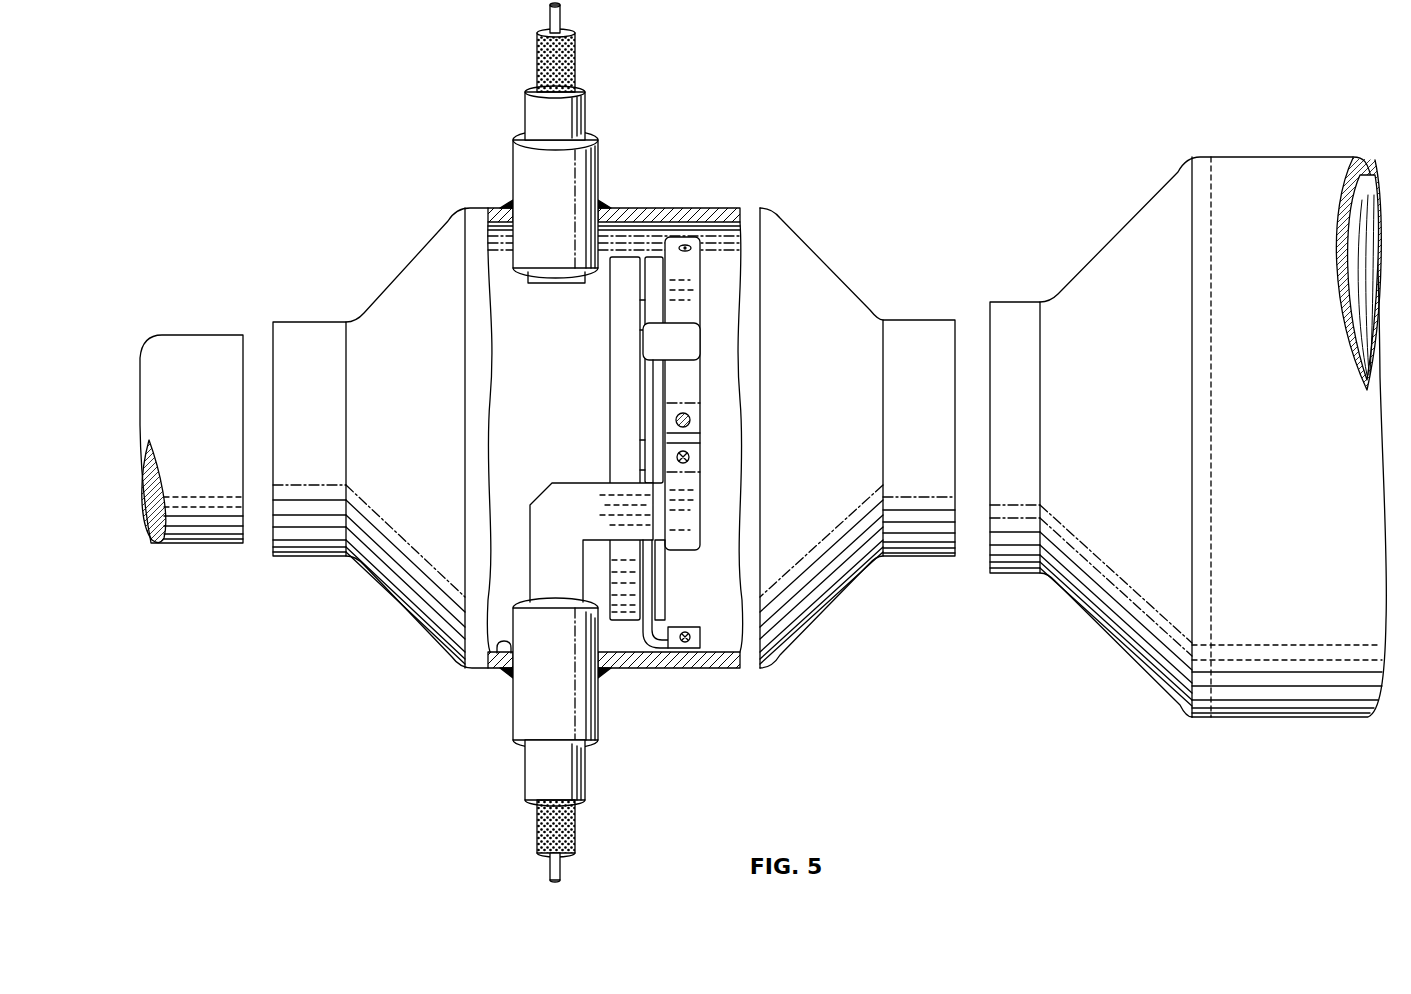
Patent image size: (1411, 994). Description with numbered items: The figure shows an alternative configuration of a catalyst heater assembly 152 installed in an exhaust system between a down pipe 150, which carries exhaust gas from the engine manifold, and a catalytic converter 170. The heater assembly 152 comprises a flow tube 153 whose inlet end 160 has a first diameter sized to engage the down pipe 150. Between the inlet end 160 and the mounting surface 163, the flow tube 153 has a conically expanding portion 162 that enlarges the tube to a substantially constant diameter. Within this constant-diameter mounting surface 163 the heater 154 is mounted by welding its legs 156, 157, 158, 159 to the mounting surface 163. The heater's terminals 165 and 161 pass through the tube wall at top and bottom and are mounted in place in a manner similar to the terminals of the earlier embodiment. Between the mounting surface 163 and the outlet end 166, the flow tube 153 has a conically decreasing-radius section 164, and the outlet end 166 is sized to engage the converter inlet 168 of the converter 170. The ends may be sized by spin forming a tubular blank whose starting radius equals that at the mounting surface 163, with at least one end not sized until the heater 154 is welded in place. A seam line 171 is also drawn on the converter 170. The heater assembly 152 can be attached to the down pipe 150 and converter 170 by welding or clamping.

The down pipe 150 is at (198, 352).
The heater assembly 152 is at (380, 290).
The flow tube 153 is at (472, 222).
The heater 154 is at (597, 420).
The leg 156 is at (690, 250).
The leg 157 is at (692, 380).
The leg 158 is at (692, 487).
The leg 159 is at (705, 642).
The inlet end 160 is at (297, 548).
The terminal 161 is at (588, 708).
The conically expanding portion 162 is at (397, 600).
The mounting surface 163 is at (503, 655).
The conically decreasing-radius section 164 is at (840, 278).
The terminal 165 is at (595, 163).
The outlet end 166 is at (927, 322).
The converter inlet 168 is at (1012, 312).
The converter 170 is at (1268, 160).
The seam line 171 is at (1205, 175).